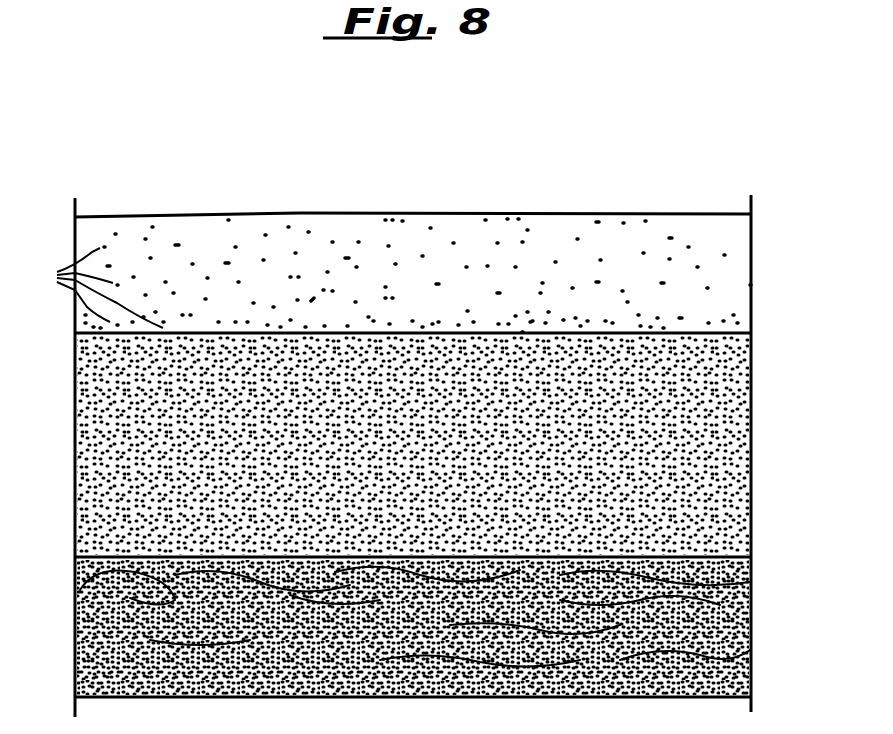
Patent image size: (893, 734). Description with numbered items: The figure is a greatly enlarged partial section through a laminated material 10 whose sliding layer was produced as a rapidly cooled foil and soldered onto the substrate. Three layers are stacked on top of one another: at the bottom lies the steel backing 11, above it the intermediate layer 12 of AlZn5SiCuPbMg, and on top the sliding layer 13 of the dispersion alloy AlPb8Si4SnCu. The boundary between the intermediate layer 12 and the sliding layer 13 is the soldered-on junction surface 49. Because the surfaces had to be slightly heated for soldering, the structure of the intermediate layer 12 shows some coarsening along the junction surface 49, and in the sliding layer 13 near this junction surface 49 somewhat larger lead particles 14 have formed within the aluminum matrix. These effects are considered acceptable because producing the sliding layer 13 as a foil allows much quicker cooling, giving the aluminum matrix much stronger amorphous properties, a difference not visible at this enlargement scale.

The laminated material 10 is at (458, 212).
The steel backing 11 is at (152, 625).
The intermediate layer 12 is at (752, 336).
The sliding layer 13 is at (733, 268).
The lead particles 14 is at (95, 288).
The junction surface 49 is at (684, 325).